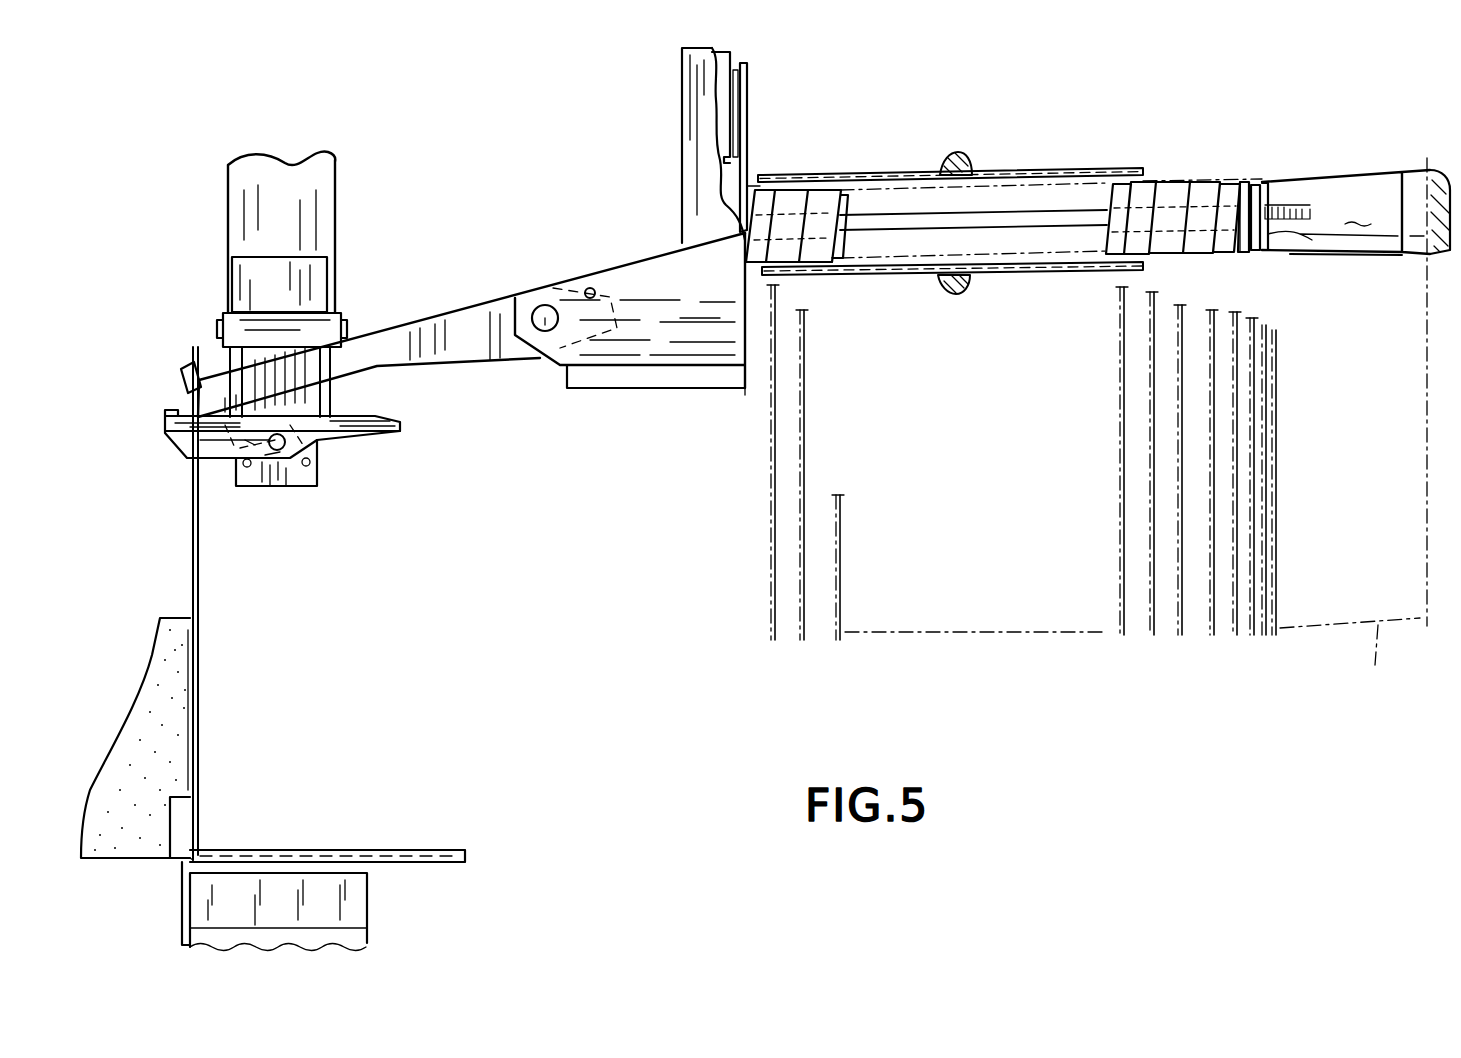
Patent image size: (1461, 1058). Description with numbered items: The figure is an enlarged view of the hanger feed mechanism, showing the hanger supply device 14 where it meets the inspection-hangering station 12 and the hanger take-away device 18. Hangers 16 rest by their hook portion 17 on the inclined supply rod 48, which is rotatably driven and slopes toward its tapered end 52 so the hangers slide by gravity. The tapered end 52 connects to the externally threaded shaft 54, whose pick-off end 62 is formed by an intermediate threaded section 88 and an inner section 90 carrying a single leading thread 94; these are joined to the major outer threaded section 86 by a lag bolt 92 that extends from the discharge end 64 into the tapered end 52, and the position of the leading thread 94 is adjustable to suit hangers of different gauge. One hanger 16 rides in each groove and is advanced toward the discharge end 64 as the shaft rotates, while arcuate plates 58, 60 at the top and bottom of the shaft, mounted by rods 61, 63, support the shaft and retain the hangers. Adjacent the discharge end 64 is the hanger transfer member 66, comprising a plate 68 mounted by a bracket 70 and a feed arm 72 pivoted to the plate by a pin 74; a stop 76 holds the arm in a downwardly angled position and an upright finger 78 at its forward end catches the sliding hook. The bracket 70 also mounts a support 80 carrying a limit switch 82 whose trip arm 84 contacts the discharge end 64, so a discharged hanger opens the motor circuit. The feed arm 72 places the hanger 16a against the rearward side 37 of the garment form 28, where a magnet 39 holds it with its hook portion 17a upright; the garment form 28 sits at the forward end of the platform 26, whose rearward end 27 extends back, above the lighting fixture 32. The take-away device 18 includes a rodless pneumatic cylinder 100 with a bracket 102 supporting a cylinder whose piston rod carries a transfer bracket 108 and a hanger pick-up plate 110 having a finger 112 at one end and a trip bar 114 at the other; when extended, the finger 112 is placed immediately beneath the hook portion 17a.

The inspection-hangering station 12 is at (325, 694).
The hanger supply device 14 is at (1414, 116).
The hangers 16 is at (773, 642).
The hanger 16a is at (200, 588).
The hook portion 17 is at (1425, 166).
The hook portion 17a is at (200, 355).
The hanger take-away device 18 is at (372, 278).
The platform 26 is at (260, 849).
The rearward end 27 is at (467, 855).
The garment form 28 is at (137, 748).
The lighting fixture 32 is at (380, 939).
The rearward side 37 is at (192, 683).
The magnet 39 is at (178, 832).
The supply rod 48 is at (1420, 260).
The tapered end 52 is at (1346, 212).
The externally threaded shaft 54 is at (1176, 172).
The arcuate plate 58 is at (1030, 170).
The arcuate plate 60 is at (1012, 275).
The rod 61 is at (954, 157).
The pick-off end 62 is at (1266, 160).
The rod 63 is at (958, 297).
The discharge end 64 is at (757, 185).
The hanger transfer member 66 is at (560, 175).
The plate 68 is at (655, 283).
The bracket 70 is at (665, 378).
The feed arm 72 is at (428, 318).
The pin 74 is at (540, 305).
The stop 76 is at (590, 288).
The upright finger 78 is at (178, 374).
The support 80 is at (695, 120).
The limit switch 82 is at (712, 78).
The trip arm 84 is at (722, 184).
The outer threaded section 86 is at (1176, 258).
The intermediate threaded section 88 is at (1266, 258).
The inner section 90 is at (1262, 262).
The lag bolt 92 is at (1303, 202).
The leading thread 94 is at (1312, 258).
The rodless pneumatic cylinder 100 is at (250, 172).
The bracket 102 is at (330, 252).
The transfer bracket 108 is at (293, 490).
The hanger pick-up plate 110 is at (225, 460).
The finger 112 is at (165, 427).
The trip bar 114 is at (402, 425).